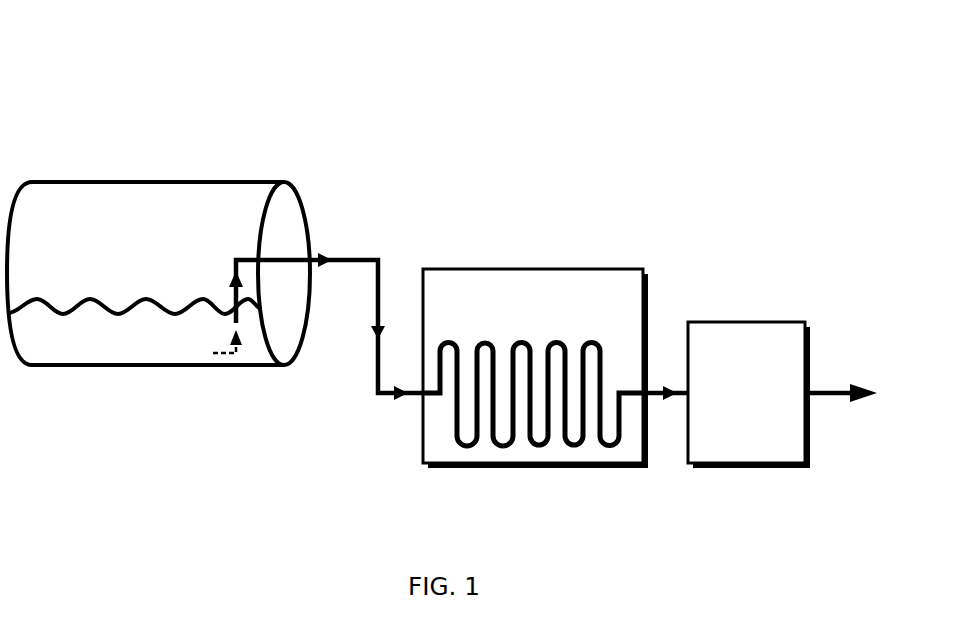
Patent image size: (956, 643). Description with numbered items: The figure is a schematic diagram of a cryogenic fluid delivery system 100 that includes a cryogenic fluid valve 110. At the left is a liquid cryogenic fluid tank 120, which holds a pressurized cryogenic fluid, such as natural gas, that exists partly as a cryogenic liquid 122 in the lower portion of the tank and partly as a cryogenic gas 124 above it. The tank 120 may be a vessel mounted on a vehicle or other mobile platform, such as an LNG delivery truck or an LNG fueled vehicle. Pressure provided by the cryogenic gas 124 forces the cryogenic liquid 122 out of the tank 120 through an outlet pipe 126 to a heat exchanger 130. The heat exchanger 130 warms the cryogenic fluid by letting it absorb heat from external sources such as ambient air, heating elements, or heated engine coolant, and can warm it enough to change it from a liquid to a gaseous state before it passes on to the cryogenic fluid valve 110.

The cryogenic fluid delivery system 100 is at (86, 42).
The cryogenic fluid valve 110 is at (761, 436).
The liquid cryogenic fluid tank 120 is at (156, 260).
The cryogenic liquid 122 is at (122, 350).
The cryogenic gas 124 is at (126, 285).
The outlet pipe 126 is at (368, 259).
The heat exchanger 130 is at (548, 326).